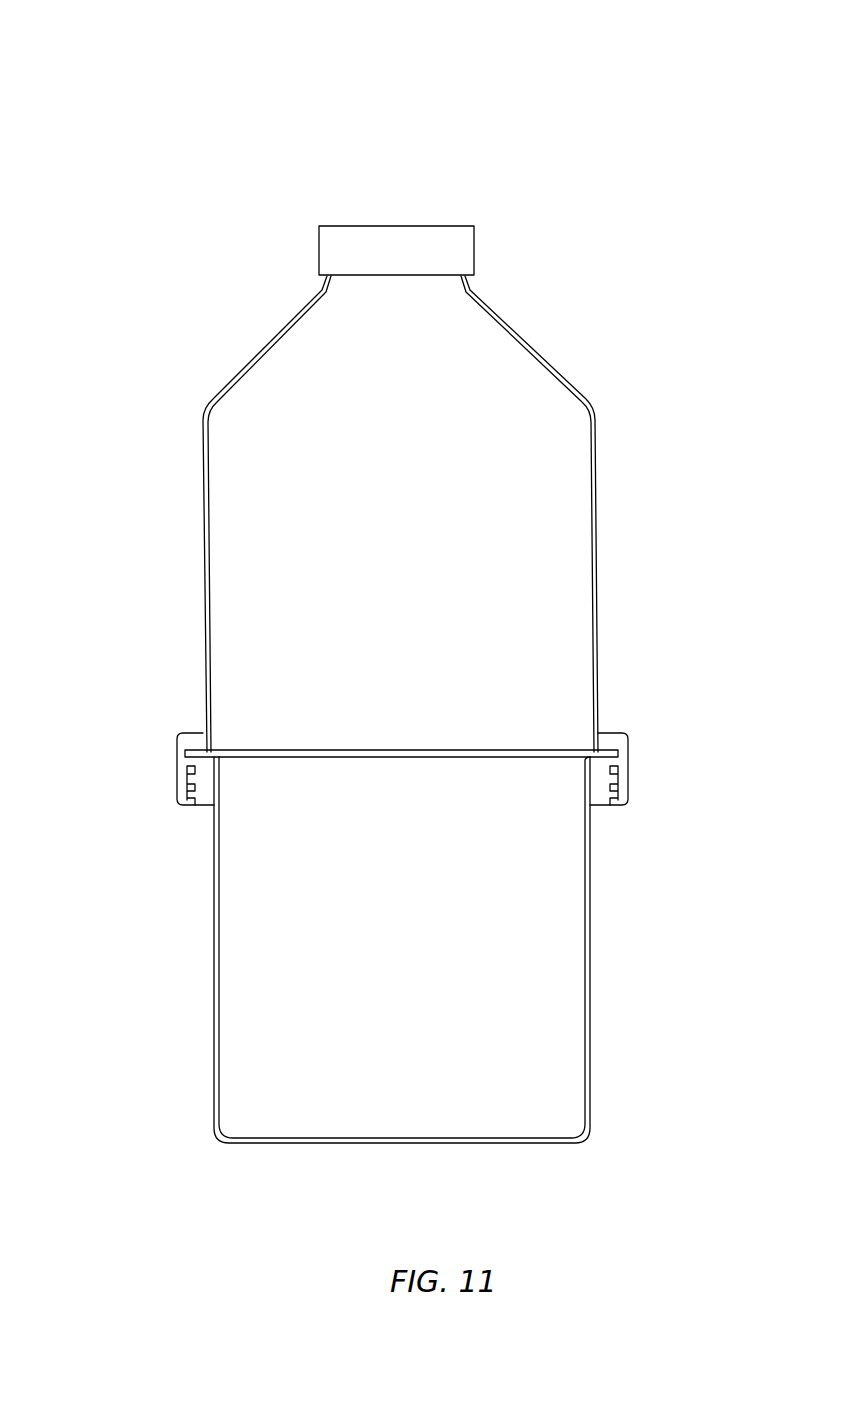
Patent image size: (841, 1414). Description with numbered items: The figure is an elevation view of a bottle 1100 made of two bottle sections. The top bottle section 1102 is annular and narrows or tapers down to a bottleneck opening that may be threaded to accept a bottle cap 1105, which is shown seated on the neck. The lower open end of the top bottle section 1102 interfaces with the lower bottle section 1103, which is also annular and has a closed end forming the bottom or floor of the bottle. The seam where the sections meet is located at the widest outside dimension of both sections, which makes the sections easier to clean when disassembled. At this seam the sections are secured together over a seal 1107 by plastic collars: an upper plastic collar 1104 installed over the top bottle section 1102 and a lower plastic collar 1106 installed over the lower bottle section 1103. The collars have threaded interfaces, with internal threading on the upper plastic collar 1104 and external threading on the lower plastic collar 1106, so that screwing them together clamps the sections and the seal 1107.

The bottle 1100 is at (258, 126).
The top bottle section 1102 is at (203, 534).
The lower bottle section 1103 is at (591, 975).
The upper plastic collar 1104 is at (626, 735).
The bottle cap 1105 is at (474, 246).
The lower plastic collar 1106 is at (204, 806).
The seal 1107 is at (412, 750).